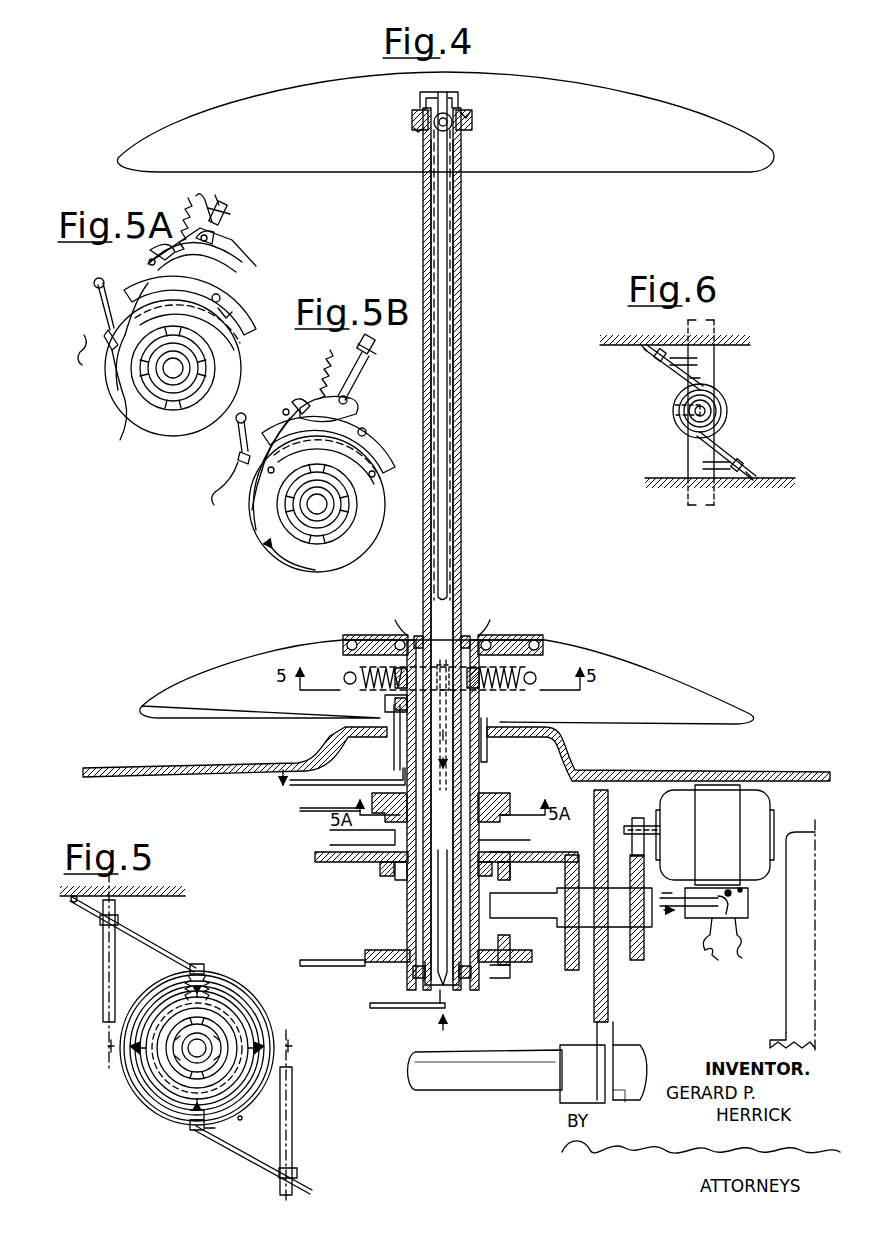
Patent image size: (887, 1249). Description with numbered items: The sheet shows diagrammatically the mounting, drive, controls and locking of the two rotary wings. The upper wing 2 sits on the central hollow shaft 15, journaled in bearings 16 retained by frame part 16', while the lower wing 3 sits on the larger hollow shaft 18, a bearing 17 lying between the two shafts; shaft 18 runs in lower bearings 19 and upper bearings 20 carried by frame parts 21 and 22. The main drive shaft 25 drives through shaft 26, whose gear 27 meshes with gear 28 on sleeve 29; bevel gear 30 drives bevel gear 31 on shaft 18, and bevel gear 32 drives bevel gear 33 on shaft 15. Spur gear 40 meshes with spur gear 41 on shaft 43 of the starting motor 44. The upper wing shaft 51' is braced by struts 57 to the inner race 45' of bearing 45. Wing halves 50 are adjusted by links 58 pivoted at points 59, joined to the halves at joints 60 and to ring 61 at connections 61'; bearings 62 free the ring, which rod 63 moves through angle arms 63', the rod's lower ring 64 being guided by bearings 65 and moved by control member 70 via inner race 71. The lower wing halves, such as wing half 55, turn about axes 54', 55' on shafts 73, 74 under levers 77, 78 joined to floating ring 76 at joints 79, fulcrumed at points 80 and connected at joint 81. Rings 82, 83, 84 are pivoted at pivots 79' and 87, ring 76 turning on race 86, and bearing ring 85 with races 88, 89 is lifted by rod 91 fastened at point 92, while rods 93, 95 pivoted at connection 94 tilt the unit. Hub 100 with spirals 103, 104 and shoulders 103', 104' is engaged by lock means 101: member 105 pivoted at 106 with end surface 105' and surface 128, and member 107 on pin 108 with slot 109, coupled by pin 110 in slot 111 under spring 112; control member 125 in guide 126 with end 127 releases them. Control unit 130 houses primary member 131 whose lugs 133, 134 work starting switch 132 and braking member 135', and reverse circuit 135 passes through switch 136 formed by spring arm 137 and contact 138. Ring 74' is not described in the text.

In FIG. 4, the upper wing 2 is at (660, 174).
In FIG. 4, the lower wing 3 is at (603, 662).
In FIG. 4, the central hollow shaft 15 is at (462, 290).
In FIG. 6, the central hollow shaft 15 is at (689, 432).
In FIG. 5, the central hollow shaft 15 is at (175, 1092).
In FIG. 5A, the central hollow shaft 15 is at (176, 402).
In FIG. 4, the bearings 16 is at (505, 971).
In FIG. 4, the frame part 16' is at (355, 960).
In FIG. 4, the bearing 17 is at (472, 636).
In FIG. 4, the hollow shaft 18 is at (479, 785).
In FIG. 5, the hollow shaft 18 is at (186, 1104).
In FIG. 5A, the hollow shaft 18 is at (182, 407).
In FIG. 4, the lower bearings 19 is at (400, 878).
In FIG. 4, the upper bearings 20 is at (482, 735).
In FIG. 4, the frame part 21 is at (380, 868).
In FIG. 4, the frame part 22 is at (322, 760).
In FIG. 4, the main drive shaft 25 is at (482, 1094).
In FIG. 4, the transmission shaft 26 is at (540, 915).
In FIG. 4, the gear 27 is at (609, 1000).
In FIG. 4, the gear 28 is at (610, 1032).
In FIG. 4, the sleeve 29 is at (565, 1103).
In FIG. 4, the bevel gear 30 is at (574, 968).
In FIG. 4, the bevel gear 31 is at (530, 856).
In FIG. 4, the bevel gear 32 is at (510, 950).
In FIG. 4, the bevel gear 33 is at (512, 970).
In FIG. 4, the spur gear 40 is at (636, 955).
In FIG. 4, the spur gear 41 is at (638, 818).
In FIG. 4, the motor shaft 43 is at (650, 830).
In FIG. 4, the starting motor 44 is at (760, 812).
In FIG. 4, the bearing 45 is at (443, 617).
In FIG. 4, the inner race 45' is at (443, 635).
In FIG. 6, the wing halves 50 is at (596, 345).
In FIG. 4, the shaft 51' is at (470, 134).
In FIG. 6, the shaft 51' is at (724, 407).
In FIG. 5, the transverse axis 54' is at (302, 1052).
In FIG. 5, the wing half 55 is at (136, 887).
In FIG. 5, the transverse axis 55' is at (92, 1053).
In FIG. 4, the inclined struts 57 is at (461, 201).
In FIG. 6, the links 58 is at (676, 388).
In FIG. 6, the pivot points 59 is at (657, 371).
In FIG. 6, the ball socket joints 60 is at (641, 352).
In FIG. 4, the adjustable ring 61 is at (445, 120).
In FIG. 6, the adjustable ring 61 is at (725, 411).
In FIG. 6, the link connections 61' is at (708, 407).
In FIG. 4, the bearings 62 is at (470, 113).
In FIG. 6, the bearings 62 is at (726, 423).
In FIG. 4, the rod 63 is at (451, 538).
In FIG. 4, the angle arms 63' is at (447, 82).
In FIG. 6, the angle arms 63' is at (693, 404).
In FIG. 4, the ring 64 is at (458, 992).
In FIG. 4, the bearings 65 is at (430, 1000).
In FIG. 4, the control member 70 is at (386, 1010).
In FIG. 4, the inner race 71 is at (436, 1015).
In FIG. 5, the shaft 73 is at (292, 1150).
In FIG. 5, the shaft 74 is at (90, 971).
In FIG. 5, the ring 74' is at (203, 1012).
In FIG. 5, the floating ring 76 is at (240, 990).
In FIG. 5, the operating lever 77 is at (240, 1160).
In FIG. 5, the operating lever 78 is at (150, 945).
In FIG. 5, the universal joints 79 is at (198, 1055).
In FIG. 5, the pivots 79' is at (181, 1134).
In FIG. 5, the fulcrum points 80 is at (116, 920).
In FIG. 5, the universal joint 81 is at (73, 902).
In FIG. 5, the ring 82 is at (247, 1002).
In FIG. 5, the ring 83 is at (252, 1013).
In FIG. 5, the ring 84 is at (262, 1025).
In FIG. 5, the bearing ring 85 is at (268, 1036).
In FIG. 5, the bearing race 86 is at (280, 1050).
In FIG. 5, the pivots 87 is at (280, 1060).
In FIG. 5, the outer race 88 is at (212, 1130).
In FIG. 5, the inner race 89 is at (242, 1118).
In FIG. 4, the operating rod 91 is at (292, 783).
In FIG. 4, the fastening point 92 is at (390, 706).
In FIG. 4, the operating rod 93 is at (394, 748).
In FIG. 4, the pivot connection 94 is at (360, 673).
In FIG. 5, the pivot connection 94 is at (135, 1086).
In FIG. 4, the operating rod 95 is at (440, 772).
In FIG. 5, the operating rod 95 is at (185, 967).
In FIG. 4, the hub 100 is at (500, 793).
In FIG. 5A, the hub 100 is at (140, 428).
In FIG. 5B, the hub 100 is at (365, 548).
In FIG. 5A, the lock means 101 is at (244, 270).
In FIG. 5A, the spiral 103 is at (212, 348).
In FIG. 5A, the shoulder 103' is at (208, 334).
In FIG. 5B, the shoulder 103' is at (348, 477).
In FIG. 5A, the spiral 104 is at (99, 305).
In FIG. 5A, the shoulder 104' is at (98, 395).
In FIG. 5B, the shoulder 104' is at (237, 503).
In FIG. 5A, the pivoted locking member 105 is at (122, 294).
In FIG. 5B, the pivoted locking member 105 is at (276, 427).
In FIG. 5A, the locking end surface 105' is at (99, 373).
In FIG. 5B, the locking end surface 105' is at (239, 491).
In FIG. 5A, the pivot 106 is at (148, 252).
In FIG. 5B, the pivot 106 is at (310, 390).
In FIG. 5A, the locking member 107 is at (216, 282).
In FIG. 5B, the locking member 107 is at (378, 460).
In FIG. 5A, the pivot pin 108 is at (226, 314).
In FIG. 5B, the pivot pin 108 is at (367, 431).
In FIG. 5A, the slot 109 is at (220, 300).
In FIG. 5A, the pin 110 is at (214, 203).
In FIG. 5A, the transverse slot 111 is at (221, 200).
In FIG. 5A, the spring 112 is at (196, 200).
In FIG. 5B, the spring 112 is at (315, 358).
In FIG. 4, the control member 125 is at (300, 810).
In FIG. 5A, the control member 125 is at (230, 214).
In FIG. 5B, the control member 125 is at (376, 343).
In FIG. 5B, the guide 126 is at (368, 361).
In FIG. 5B, the operating end 127 is at (348, 392).
In FIG. 5A, the operating surface 128 is at (210, 246).
In FIG. 5B, the operating surface 128 is at (358, 407).
In FIG. 4, the control unit 130 is at (746, 920).
In FIG. 4, the primary control member 131 is at (680, 907).
In FIG. 4, the starting switch member 132 is at (730, 906).
In FIG. 4, the lug 133 is at (742, 891).
In FIG. 4, the lug 134 is at (712, 955).
In FIG. 4, the reverse circuit 135 is at (753, 948).
In FIG. 5A, the reverse circuit 135 is at (66, 342).
In FIG. 5B, the reverse circuit 135 is at (205, 487).
In FIG. 4, the control member 135' is at (692, 937).
In FIG. 5B, the switch 136 is at (232, 457).
In FIG. 5B, the spring arm 137 is at (238, 436).
In FIG. 5B, the contact 138 is at (256, 411).